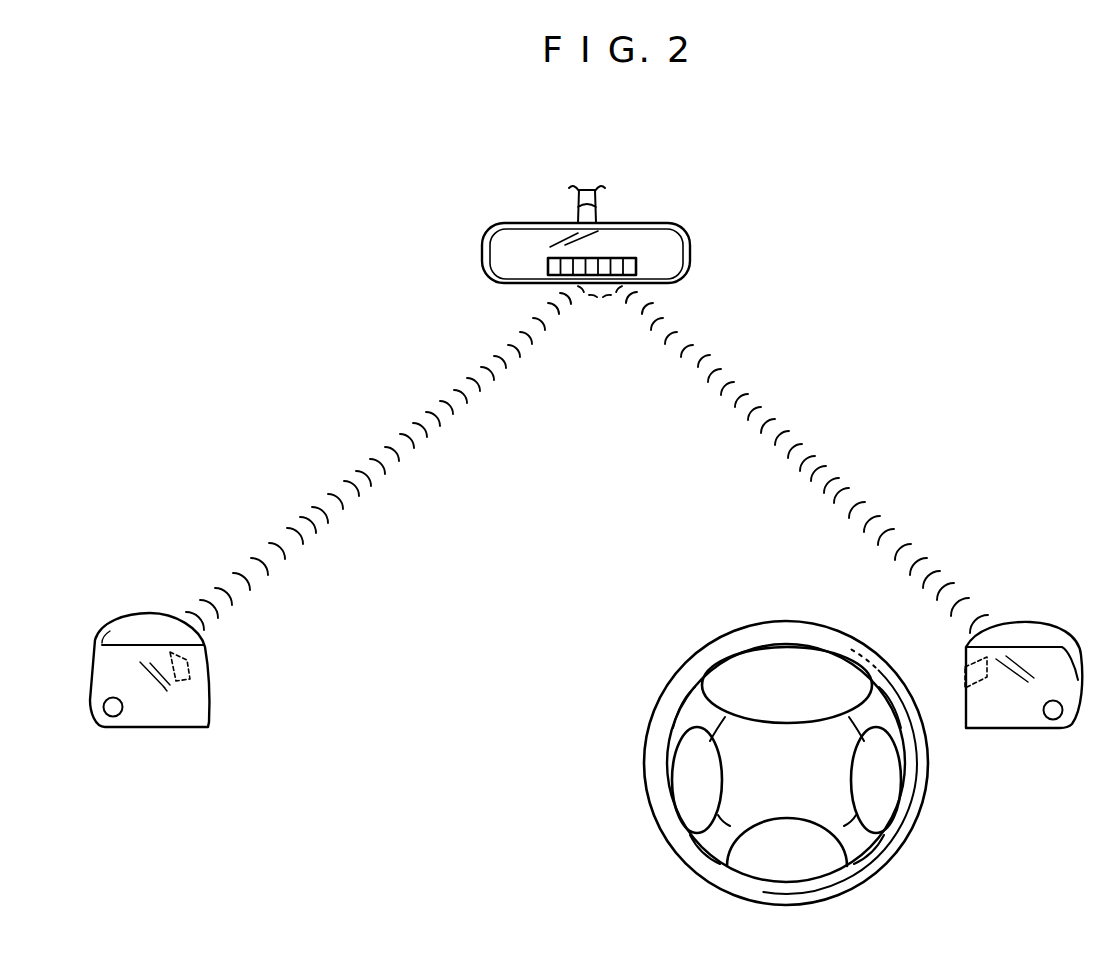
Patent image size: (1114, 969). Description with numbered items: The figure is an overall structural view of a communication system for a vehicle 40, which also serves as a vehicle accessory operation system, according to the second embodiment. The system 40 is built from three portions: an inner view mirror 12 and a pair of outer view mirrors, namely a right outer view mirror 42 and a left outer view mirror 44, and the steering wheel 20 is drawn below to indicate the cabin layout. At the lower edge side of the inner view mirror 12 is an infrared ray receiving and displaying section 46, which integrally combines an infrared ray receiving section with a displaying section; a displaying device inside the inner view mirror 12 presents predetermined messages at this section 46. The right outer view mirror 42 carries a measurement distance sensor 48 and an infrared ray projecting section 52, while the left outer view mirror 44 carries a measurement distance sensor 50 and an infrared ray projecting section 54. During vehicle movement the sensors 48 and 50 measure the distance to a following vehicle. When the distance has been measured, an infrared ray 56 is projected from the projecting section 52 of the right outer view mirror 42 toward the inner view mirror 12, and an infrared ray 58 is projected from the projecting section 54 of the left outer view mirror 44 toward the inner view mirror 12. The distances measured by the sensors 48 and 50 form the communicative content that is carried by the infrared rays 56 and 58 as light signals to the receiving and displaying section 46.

The inner view mirror 12 is at (698, 241).
The infrared ray receiving and displaying section 46 is at (636, 266).
The communication system for a vehicle 40 is at (893, 435).
The infrared ray 58 is at (466, 399).
The infrared ray 56 is at (880, 518).
The left outer view mirror 44 is at (151, 612).
The right outer view mirror 42 is at (1031, 620).
The measurement distance sensor 50 is at (117, 710).
The measurement distance sensor 48 is at (1053, 714).
The infrared ray projecting section 54 is at (188, 668).
The infrared ray projecting section 52 is at (987, 677).
The steering wheel 20 is at (735, 637).